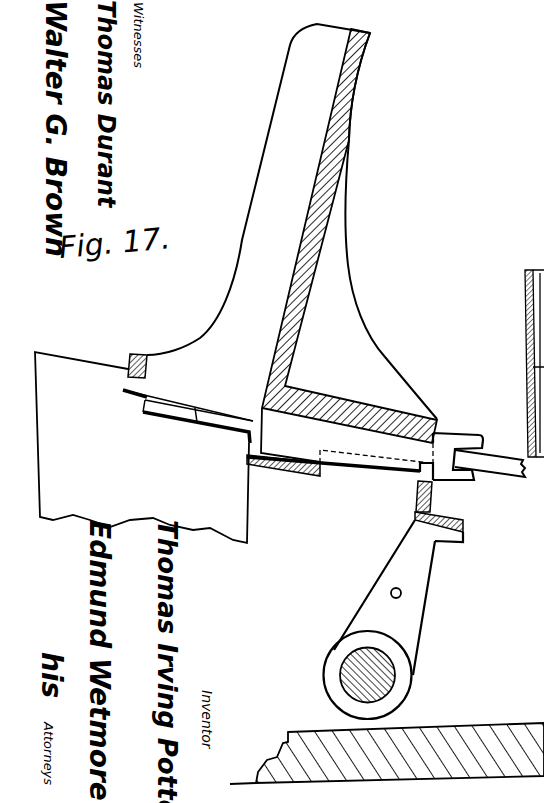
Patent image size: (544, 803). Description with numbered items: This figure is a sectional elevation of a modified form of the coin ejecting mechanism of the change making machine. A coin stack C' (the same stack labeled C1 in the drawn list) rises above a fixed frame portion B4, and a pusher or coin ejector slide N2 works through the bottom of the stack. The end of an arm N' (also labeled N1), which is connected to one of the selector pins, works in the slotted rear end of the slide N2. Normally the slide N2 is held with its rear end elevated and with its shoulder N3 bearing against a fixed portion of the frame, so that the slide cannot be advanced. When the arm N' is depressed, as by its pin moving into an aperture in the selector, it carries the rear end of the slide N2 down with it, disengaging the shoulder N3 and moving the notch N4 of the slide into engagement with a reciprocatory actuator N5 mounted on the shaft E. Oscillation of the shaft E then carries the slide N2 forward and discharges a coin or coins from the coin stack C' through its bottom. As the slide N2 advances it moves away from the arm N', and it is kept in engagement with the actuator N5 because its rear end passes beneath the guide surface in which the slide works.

The coin stack C' is at (292, 233).
The cutter blade C1 is at (292, 233).
The frame block B4 is at (144, 447).
The coin ejector slide N2 is at (340, 442).
The shoulder N3 is at (437, 432).
The notch N4 is at (420, 473).
The arm N' is at (490, 479).
The connecting rod N1 is at (490, 479).
The reciprocatory actuator N5 is at (428, 518).
The shaft E is at (390, 673).